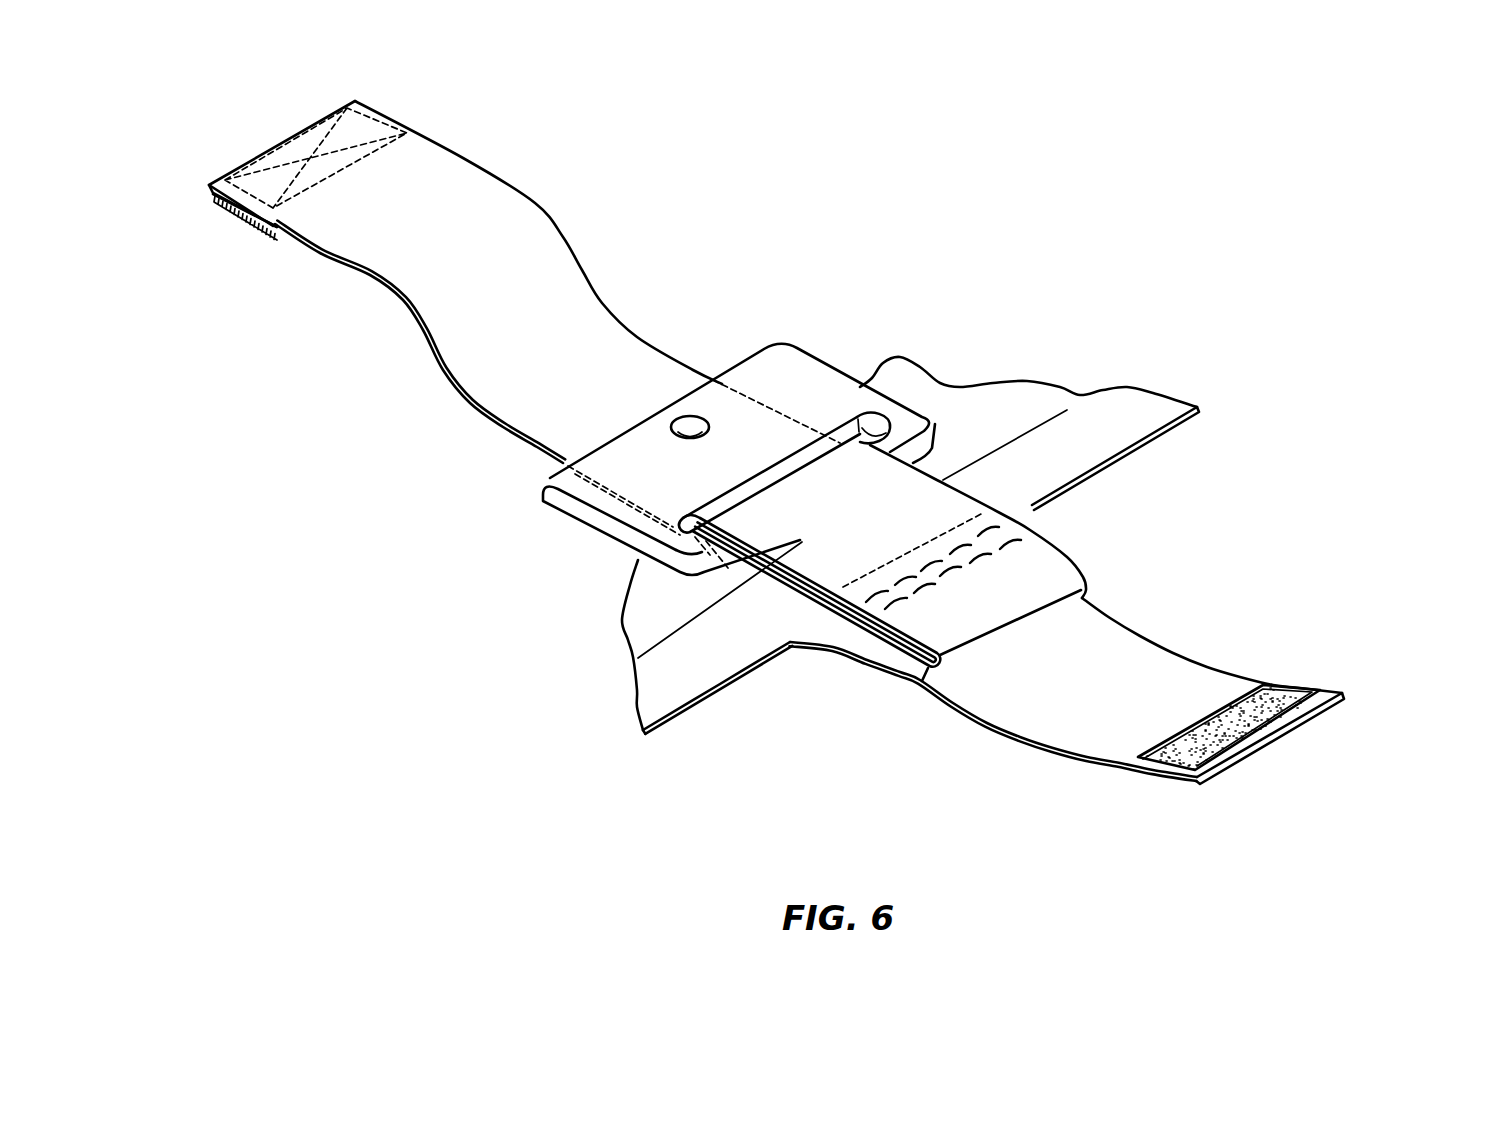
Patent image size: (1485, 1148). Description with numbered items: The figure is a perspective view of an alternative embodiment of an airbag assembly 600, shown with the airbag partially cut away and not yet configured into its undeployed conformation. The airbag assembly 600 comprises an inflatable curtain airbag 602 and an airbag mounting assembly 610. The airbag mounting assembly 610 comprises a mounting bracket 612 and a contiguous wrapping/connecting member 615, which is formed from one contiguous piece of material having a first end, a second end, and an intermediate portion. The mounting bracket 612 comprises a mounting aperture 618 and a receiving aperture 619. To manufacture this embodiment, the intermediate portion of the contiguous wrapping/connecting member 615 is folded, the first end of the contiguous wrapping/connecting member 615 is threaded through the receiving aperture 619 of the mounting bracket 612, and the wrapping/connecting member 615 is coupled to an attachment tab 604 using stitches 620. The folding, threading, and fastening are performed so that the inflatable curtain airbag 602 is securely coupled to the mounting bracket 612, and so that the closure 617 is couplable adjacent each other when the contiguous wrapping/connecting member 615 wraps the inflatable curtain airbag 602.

The airbag assembly 600 is at (1064, 280).
The inflatable curtain airbag 602 is at (640, 587).
The attachment tab 604 is at (890, 665).
The airbag mounting assembly 610 is at (850, 349).
The mounting bracket 612 is at (778, 360).
The contiguous wrapping/connecting member 615 is at (453, 180).
The closure 617 is at (245, 212).
The mounting aperture 618 is at (677, 415).
The receiving aperture 619 is at (967, 383).
The stitches 620 is at (990, 519).